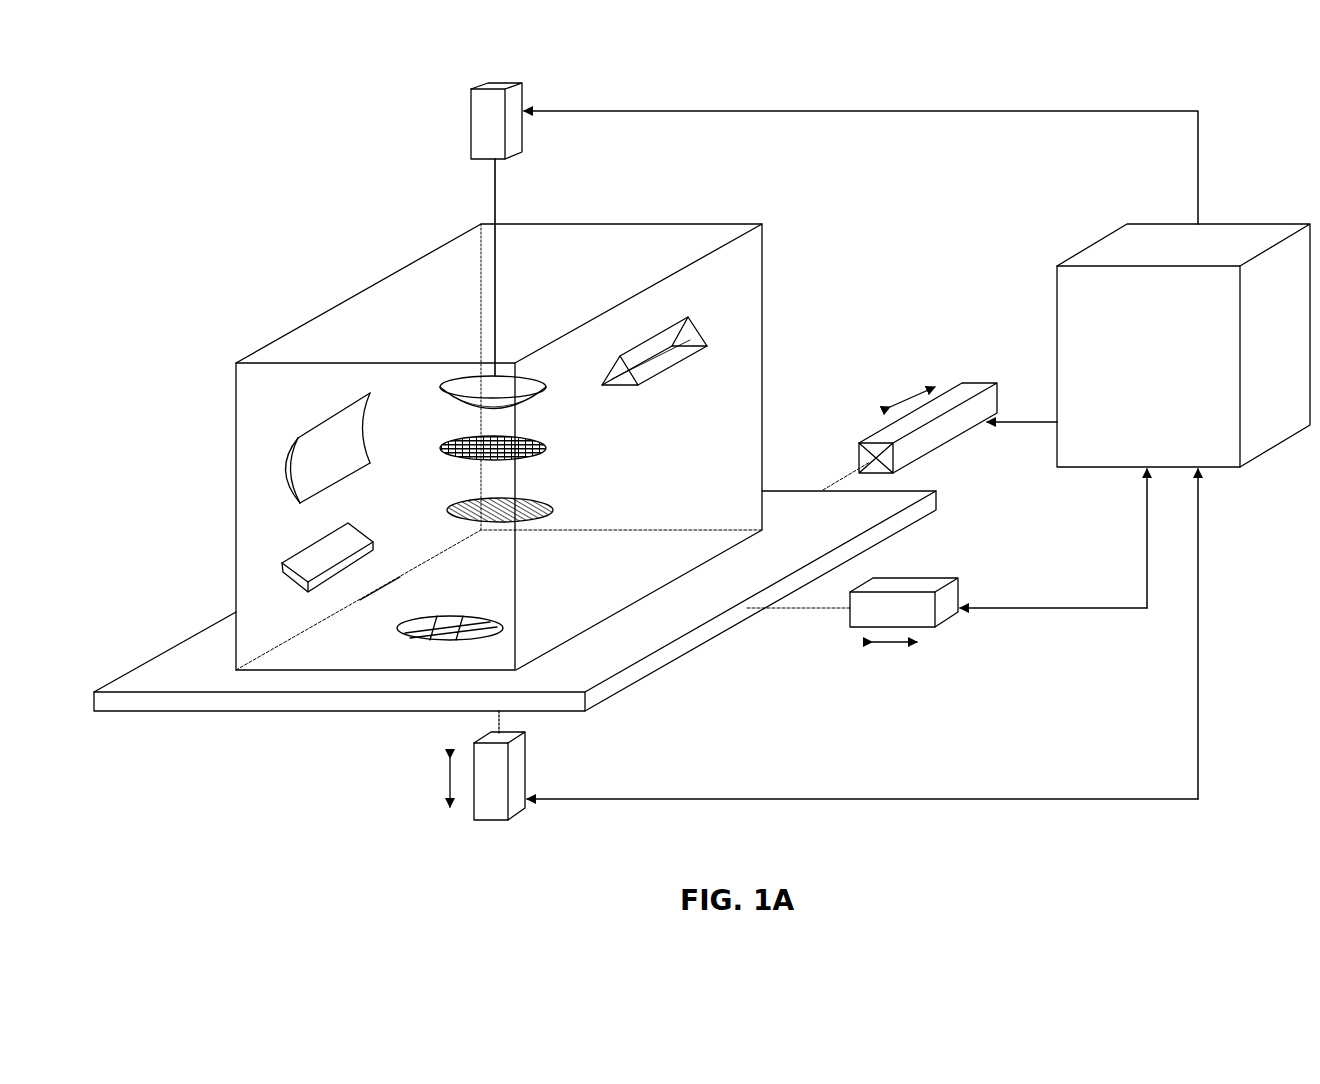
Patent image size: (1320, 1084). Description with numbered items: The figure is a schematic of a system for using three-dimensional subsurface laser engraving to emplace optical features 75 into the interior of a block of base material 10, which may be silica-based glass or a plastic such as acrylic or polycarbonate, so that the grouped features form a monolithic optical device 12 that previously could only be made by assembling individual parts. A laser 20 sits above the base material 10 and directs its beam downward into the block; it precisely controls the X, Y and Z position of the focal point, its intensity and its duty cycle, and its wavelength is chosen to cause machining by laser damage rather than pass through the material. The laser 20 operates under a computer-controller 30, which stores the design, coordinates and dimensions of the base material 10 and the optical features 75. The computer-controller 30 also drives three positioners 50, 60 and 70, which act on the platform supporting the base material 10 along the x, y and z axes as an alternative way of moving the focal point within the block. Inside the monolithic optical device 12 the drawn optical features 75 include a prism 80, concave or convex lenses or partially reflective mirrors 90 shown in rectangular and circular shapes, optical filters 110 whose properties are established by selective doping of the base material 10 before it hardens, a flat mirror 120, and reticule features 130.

The base material 10 is at (765, 258).
The monolithic optical device 12 is at (296, 302).
The laser 20 is at (470, 148).
The computer-controller 30 is at (1240, 222).
The 3-axis positioner 50 is at (978, 383).
The 3-axis positioner 60 is at (950, 578).
The 3-axis positioner 70 is at (482, 822).
The optical features 75 is at (248, 394).
The prism 80 is at (700, 330).
The mirrors/lenses 90 is at (445, 388).
The optical filter 110 is at (441, 449).
The flat mirror 120 is at (281, 568).
The reticule features 130 is at (400, 628).